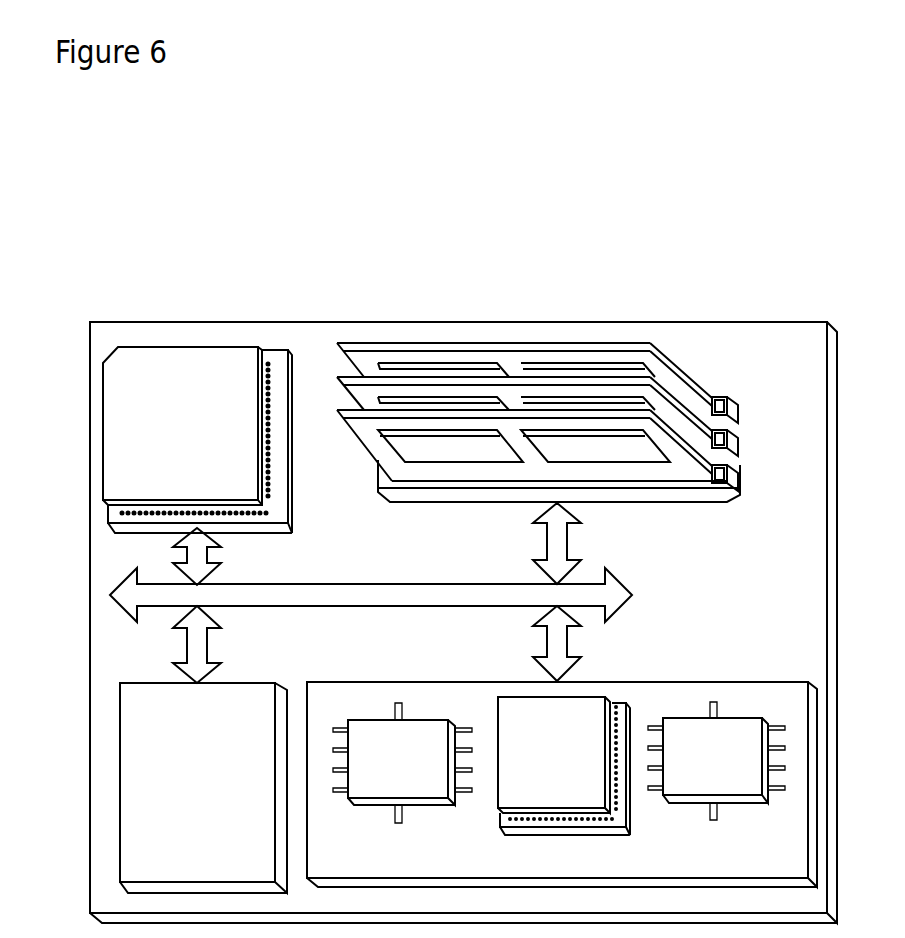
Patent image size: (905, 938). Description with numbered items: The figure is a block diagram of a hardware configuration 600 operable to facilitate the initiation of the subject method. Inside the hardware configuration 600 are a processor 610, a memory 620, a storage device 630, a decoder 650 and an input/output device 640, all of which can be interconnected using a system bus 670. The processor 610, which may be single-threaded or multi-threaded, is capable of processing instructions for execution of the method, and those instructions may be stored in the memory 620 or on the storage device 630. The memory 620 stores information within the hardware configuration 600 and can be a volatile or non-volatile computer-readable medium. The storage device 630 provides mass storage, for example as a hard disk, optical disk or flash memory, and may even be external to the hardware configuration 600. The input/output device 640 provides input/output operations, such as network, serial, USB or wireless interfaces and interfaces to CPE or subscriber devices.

The hardware configuration 600 is at (329, 209).
The processor 610 is at (213, 477).
The memory 620 is at (708, 393).
The storage device 630 is at (228, 861).
The input/output device 640 is at (757, 681).
The decoder 650 is at (293, 522).
The system bus 670 is at (380, 607).